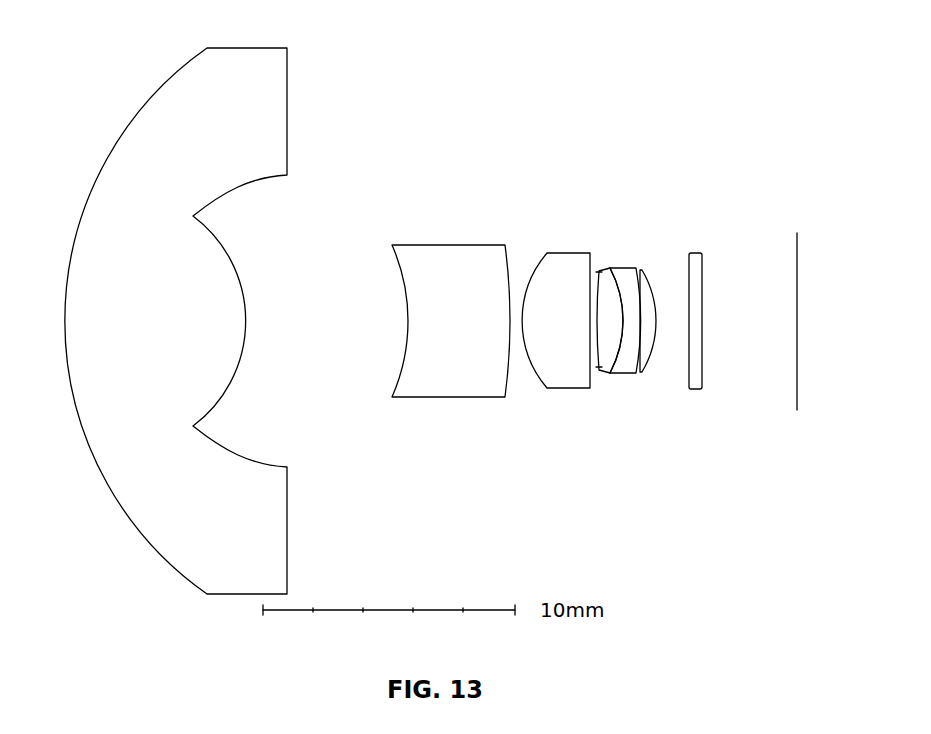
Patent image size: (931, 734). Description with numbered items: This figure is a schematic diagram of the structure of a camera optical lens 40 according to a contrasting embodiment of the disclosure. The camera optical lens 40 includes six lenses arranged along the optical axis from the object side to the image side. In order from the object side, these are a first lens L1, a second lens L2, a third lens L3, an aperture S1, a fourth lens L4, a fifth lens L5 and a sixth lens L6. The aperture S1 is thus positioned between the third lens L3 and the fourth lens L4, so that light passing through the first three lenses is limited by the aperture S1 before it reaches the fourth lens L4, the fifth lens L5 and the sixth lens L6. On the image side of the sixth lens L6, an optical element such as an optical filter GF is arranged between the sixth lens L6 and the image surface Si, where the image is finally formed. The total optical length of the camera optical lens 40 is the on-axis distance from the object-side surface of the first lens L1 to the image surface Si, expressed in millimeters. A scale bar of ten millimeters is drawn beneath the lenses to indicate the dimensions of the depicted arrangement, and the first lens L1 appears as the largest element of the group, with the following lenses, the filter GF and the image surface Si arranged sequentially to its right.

The camera optical lens 40 is at (452, 34).
The first lens L1 is at (176, 308).
The second lens L2 is at (451, 308).
The third lens L3 is at (556, 308).
The fourth lens L4 is at (608, 308).
The fifth lens L5 is at (626, 308).
The sixth lens L6 is at (659, 312).
The aperture S1 is at (598, 368).
The optical filter GF is at (712, 314).
The image surface Si is at (810, 310).